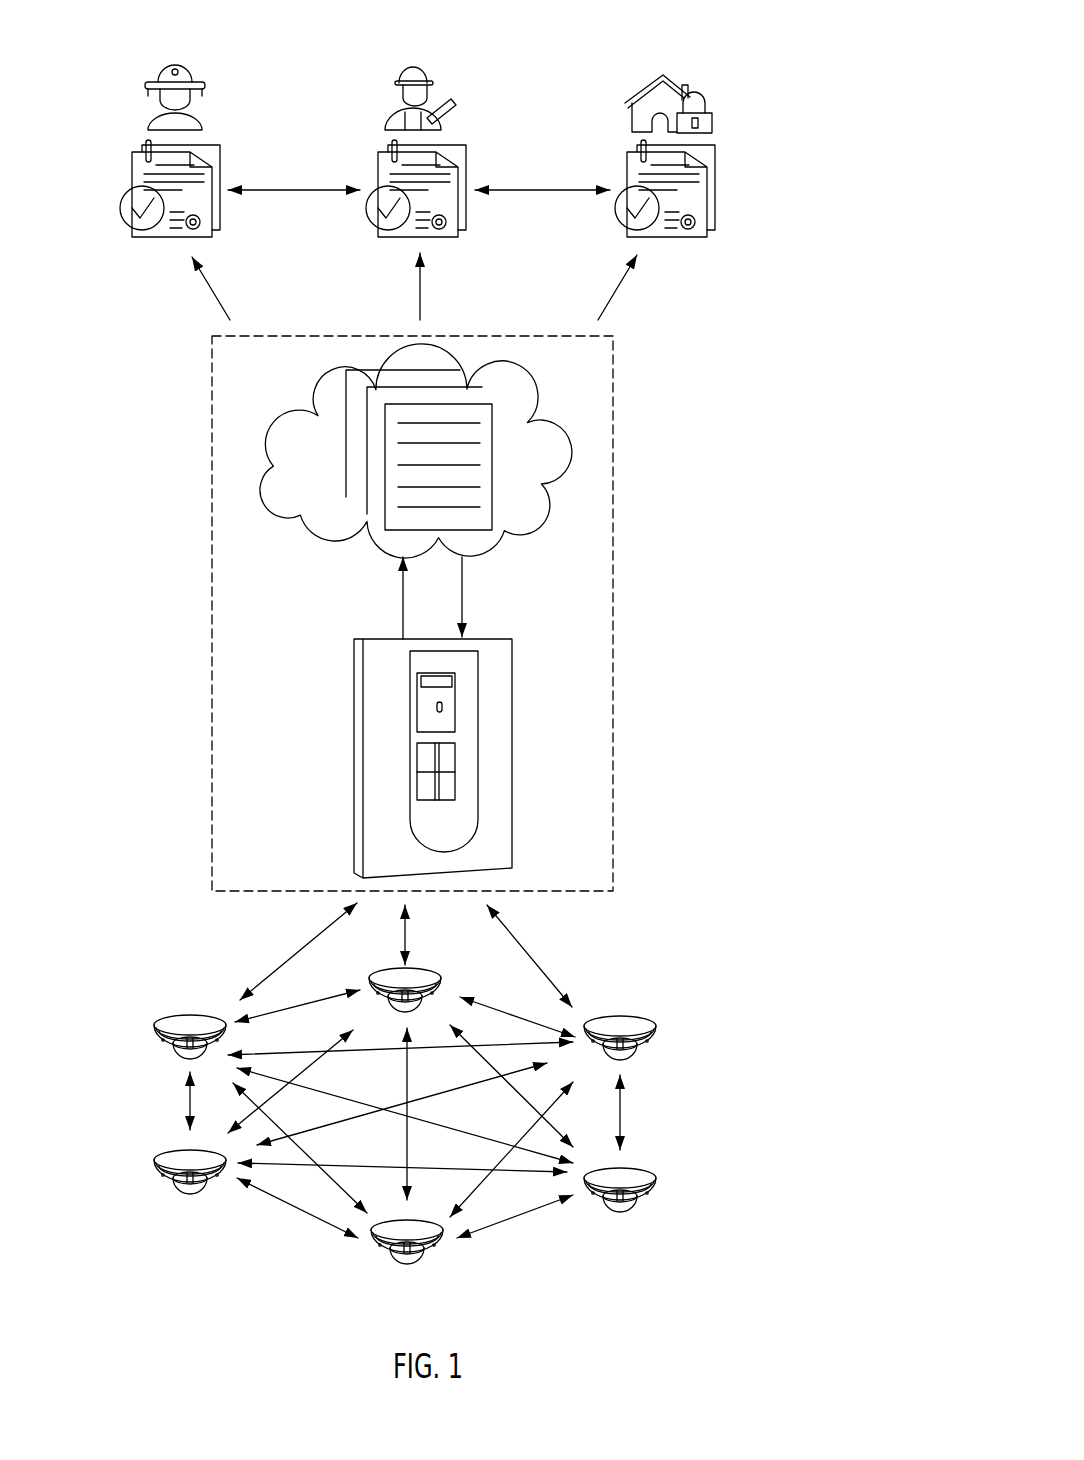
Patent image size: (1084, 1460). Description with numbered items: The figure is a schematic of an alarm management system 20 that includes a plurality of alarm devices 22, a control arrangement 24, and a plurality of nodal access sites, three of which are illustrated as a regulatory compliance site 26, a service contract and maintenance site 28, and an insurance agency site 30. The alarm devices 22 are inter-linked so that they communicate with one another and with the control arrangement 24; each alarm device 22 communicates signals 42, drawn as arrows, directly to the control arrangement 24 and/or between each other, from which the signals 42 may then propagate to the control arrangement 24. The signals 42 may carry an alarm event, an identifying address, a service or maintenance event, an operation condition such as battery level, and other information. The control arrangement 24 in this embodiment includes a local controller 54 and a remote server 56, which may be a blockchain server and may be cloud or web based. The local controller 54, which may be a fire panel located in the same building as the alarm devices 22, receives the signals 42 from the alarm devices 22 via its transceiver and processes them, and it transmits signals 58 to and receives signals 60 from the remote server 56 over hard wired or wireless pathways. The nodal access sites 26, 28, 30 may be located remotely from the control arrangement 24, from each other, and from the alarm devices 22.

The alarm management system 20 is at (802, 178).
The alarm devices 22 is at (640, 1057).
The control arrangement 24 is at (615, 433).
The regulatory compliance site 26 is at (207, 95).
The service contract and maintenance site 28 is at (443, 83).
The insurance agency site 30 is at (707, 110).
The signals 42 is at (277, 968).
The local controller 54 is at (512, 782).
The remote server 56 is at (552, 503).
The transmitted signals 58 is at (402, 596).
The received signals 60 is at (462, 595).